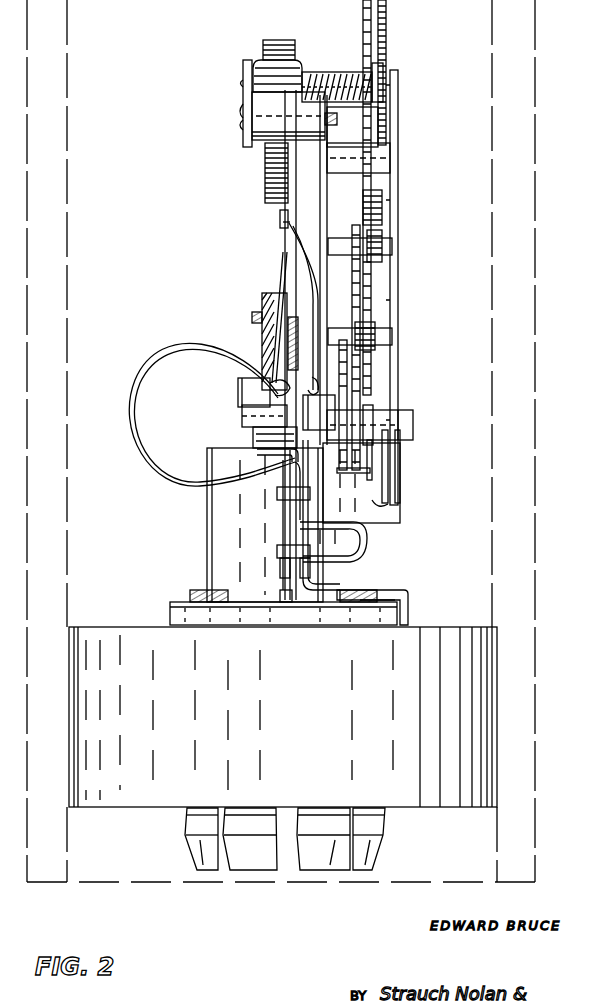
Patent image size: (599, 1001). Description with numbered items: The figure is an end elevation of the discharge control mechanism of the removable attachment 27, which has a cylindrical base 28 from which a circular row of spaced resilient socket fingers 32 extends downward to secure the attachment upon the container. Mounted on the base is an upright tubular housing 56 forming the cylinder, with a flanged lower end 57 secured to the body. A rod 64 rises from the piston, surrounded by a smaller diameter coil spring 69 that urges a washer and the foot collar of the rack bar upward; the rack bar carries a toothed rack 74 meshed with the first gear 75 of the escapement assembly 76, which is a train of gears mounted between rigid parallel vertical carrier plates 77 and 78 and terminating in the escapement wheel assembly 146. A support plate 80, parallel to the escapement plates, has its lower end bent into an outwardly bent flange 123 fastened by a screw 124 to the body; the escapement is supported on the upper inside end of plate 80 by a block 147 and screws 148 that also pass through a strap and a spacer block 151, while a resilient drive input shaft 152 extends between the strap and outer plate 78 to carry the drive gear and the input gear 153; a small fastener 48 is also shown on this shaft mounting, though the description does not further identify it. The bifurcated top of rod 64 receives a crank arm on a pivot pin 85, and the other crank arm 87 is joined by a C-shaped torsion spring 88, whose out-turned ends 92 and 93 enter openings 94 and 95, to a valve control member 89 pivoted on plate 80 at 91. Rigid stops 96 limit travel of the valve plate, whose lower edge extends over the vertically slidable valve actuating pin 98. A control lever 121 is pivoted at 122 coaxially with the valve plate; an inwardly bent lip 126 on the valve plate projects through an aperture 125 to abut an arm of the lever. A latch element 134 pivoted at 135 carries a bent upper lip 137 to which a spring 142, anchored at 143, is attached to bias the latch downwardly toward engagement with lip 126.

The attachment 27 is at (542, 557).
The cylindrical base 28 is at (410, 803).
The socket fingers 32 is at (360, 872).
The set screw 48 is at (337, 120).
The tubular housing 56 is at (212, 521).
The flanged lower end 57 is at (175, 612).
The rod 64 is at (272, 305).
The coil spring 69 is at (258, 433).
The toothed rack 74 is at (287, 37).
The first gear 75 is at (292, 72).
The escapement assembly 76 is at (385, 215).
The carrier plate 77 is at (328, 226).
The carrier plate 78 is at (397, 128).
The support plate 80 is at (290, 240).
The pivot pin 85 is at (252, 315).
The crank arm 87 is at (278, 345).
The torsion spring 88 is at (142, 455).
The valve control member 89 is at (285, 523).
The pivot 91 is at (280, 568).
The spring end 92 is at (270, 410).
The spring end 93 is at (302, 470).
The opening 94 is at (278, 390).
The opening 95 is at (258, 470).
The rigid stops 96 is at (278, 494).
The valve actuating pin 98 is at (285, 608).
The control lever 121 is at (368, 547).
The pivot 122 is at (310, 567).
The outwardly bent flange 123 is at (365, 605).
The screw 124 is at (380, 590).
The aperture 125 is at (310, 420).
The inwardly bent lip 126 is at (290, 455).
The latch element 134 is at (303, 523).
The pivot 135 is at (333, 430).
The bent upper lip 137 is at (317, 390).
The spring 142 is at (317, 300).
The anchor 143 is at (282, 224).
The escapement wheel assembly 146 is at (375, 498).
The block 147 is at (312, 110).
The screws 148 is at (238, 130).
The spacer block 151 is at (262, 140).
The resilient drive input shaft 152 is at (352, 72).
The input gear 153 is at (386, 22).